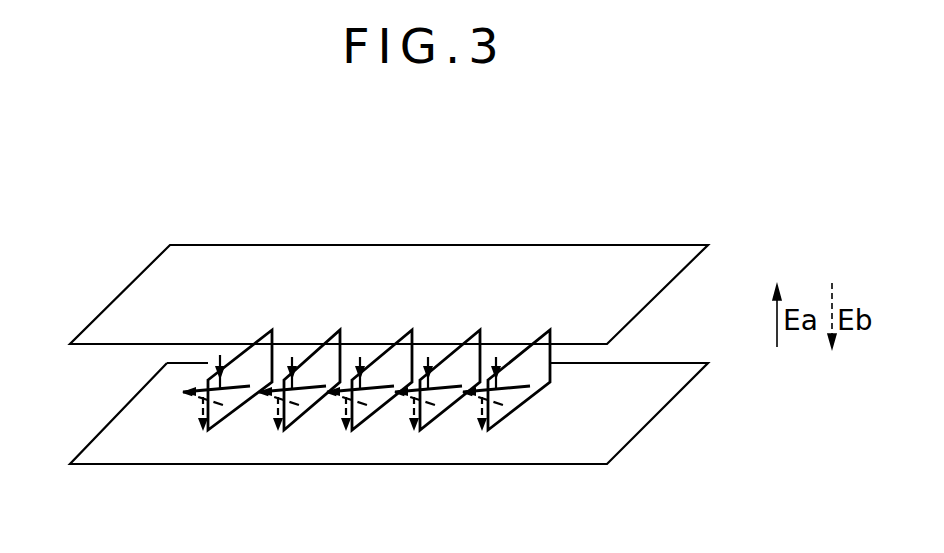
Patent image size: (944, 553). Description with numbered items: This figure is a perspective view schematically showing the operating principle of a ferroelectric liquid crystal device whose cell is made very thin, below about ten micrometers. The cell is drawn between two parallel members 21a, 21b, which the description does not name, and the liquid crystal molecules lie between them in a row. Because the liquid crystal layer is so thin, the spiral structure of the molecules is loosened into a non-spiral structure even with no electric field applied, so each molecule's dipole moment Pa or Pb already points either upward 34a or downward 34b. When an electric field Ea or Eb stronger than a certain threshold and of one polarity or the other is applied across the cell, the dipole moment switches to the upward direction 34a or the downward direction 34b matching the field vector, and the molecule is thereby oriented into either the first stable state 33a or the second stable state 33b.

The upper substrate plate 21a is at (525, 260).
The lower substrate plate 21b is at (633, 415).
The first stable state 33a is at (320, 386).
The second stable state 33b is at (218, 404).
The upward direction of dipole moment 34a is at (220, 358).
The downward direction of dipole moment 34b is at (203, 402).